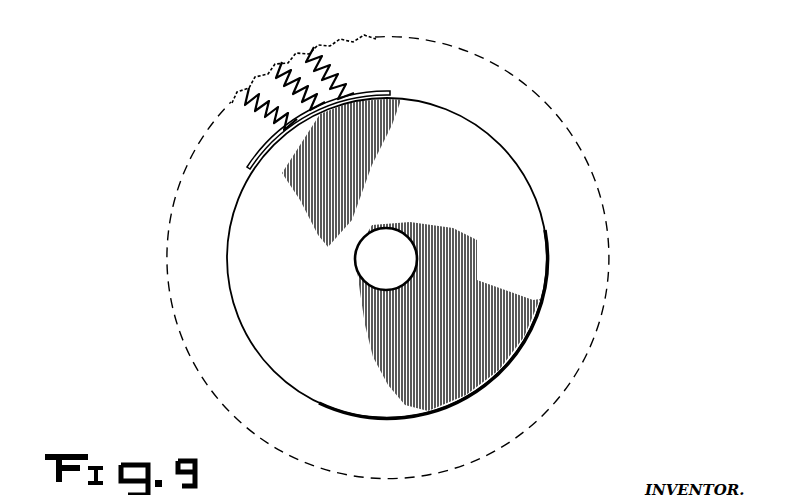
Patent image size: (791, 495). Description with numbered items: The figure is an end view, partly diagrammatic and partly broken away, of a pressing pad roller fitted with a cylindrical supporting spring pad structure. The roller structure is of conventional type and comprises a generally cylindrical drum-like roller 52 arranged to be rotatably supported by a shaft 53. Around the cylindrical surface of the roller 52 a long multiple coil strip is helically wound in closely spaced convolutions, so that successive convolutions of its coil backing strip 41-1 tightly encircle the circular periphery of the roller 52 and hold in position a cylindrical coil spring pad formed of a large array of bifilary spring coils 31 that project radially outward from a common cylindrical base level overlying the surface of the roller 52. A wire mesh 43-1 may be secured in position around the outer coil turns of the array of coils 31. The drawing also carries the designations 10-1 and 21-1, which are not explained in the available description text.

The assembly 10-1 is at (367, 257).
The outer member (phantom) 21-1 is at (572, 141).
The spring 31 is at (257, 121).
The strip 41-1 is at (263, 147).
The serrated edge 43-1 is at (228, 108).
The disc 52 is at (530, 299).
The central opening 53 is at (408, 253).